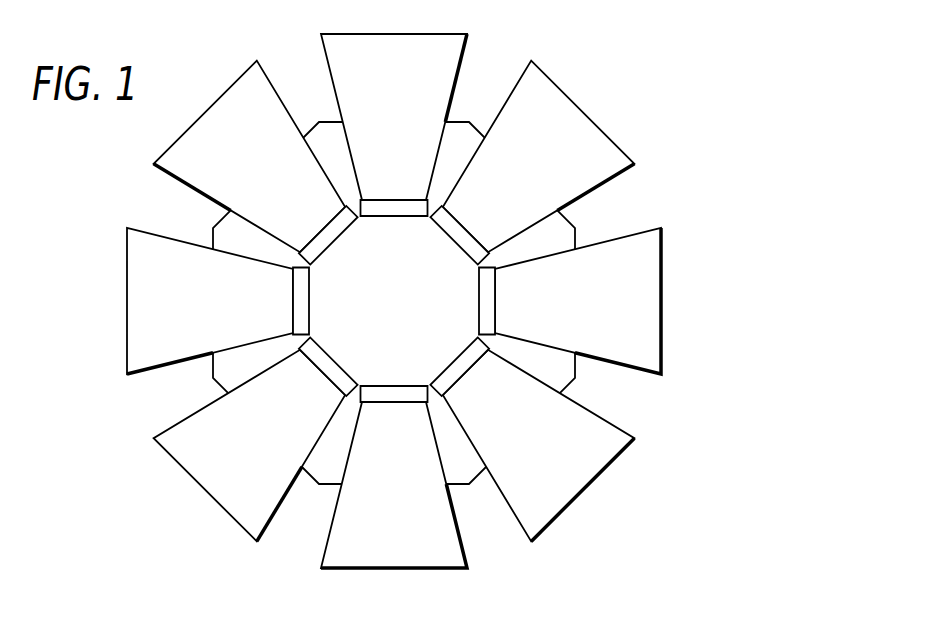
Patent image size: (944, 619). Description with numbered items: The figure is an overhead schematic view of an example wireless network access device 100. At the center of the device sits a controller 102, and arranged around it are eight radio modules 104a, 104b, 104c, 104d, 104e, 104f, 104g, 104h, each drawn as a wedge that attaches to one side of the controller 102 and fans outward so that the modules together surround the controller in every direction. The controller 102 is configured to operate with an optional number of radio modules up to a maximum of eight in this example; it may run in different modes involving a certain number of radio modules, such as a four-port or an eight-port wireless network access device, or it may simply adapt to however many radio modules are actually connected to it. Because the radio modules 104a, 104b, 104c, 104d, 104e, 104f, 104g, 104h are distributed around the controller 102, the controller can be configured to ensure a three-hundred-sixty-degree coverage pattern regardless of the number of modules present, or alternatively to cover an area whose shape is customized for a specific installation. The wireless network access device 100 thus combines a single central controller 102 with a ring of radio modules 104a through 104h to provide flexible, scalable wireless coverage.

The wireless network access device 100 is at (618, 72).
The controller 102 is at (408, 331).
The radio module 104a is at (413, 135).
The radio module 104b is at (553, 177).
The radio module 104c is at (599, 309).
The radio module 104d is at (552, 445).
The radio module 104e is at (417, 510).
The radio module 104f is at (283, 448).
The radio module 104g is at (228, 308).
The radio module 104h is at (282, 182).